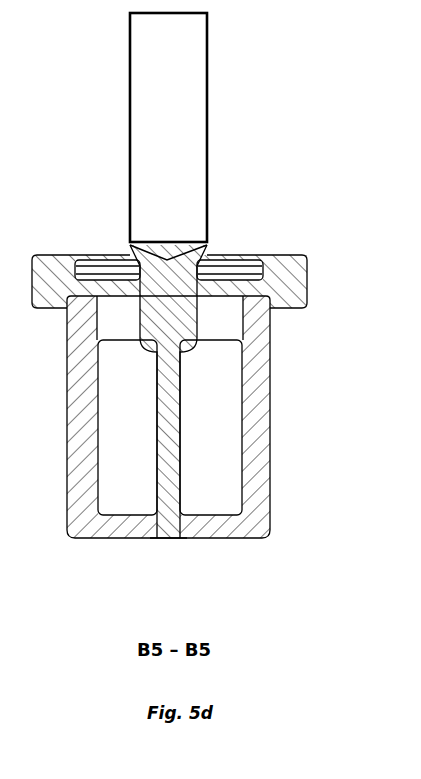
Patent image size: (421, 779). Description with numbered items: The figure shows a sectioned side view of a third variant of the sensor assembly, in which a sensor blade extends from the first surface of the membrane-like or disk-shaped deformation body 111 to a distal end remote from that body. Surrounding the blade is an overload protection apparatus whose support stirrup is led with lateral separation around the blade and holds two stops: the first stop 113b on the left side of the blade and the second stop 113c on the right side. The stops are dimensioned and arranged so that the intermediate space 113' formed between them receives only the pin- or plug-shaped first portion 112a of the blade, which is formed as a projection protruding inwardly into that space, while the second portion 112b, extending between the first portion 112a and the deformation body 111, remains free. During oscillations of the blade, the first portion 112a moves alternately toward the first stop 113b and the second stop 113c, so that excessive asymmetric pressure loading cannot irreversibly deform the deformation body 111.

The deformation body 111 is at (233, 292).
The first portion of the sensor blade 112a is at (172, 523).
The second portion of the sensor blade 112b is at (175, 462).
The first stop 113b is at (123, 530).
The second stop 113c is at (207, 525).
The intermediate space 113' is at (163, 563).